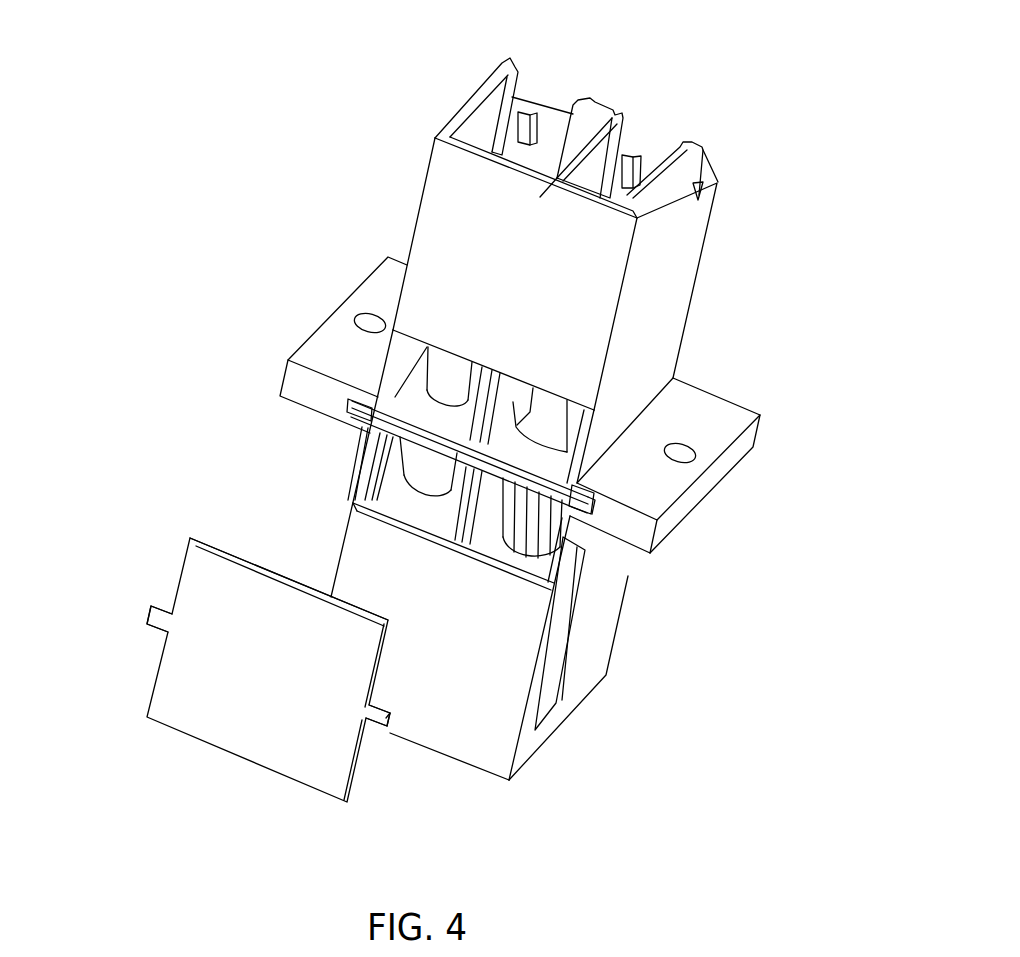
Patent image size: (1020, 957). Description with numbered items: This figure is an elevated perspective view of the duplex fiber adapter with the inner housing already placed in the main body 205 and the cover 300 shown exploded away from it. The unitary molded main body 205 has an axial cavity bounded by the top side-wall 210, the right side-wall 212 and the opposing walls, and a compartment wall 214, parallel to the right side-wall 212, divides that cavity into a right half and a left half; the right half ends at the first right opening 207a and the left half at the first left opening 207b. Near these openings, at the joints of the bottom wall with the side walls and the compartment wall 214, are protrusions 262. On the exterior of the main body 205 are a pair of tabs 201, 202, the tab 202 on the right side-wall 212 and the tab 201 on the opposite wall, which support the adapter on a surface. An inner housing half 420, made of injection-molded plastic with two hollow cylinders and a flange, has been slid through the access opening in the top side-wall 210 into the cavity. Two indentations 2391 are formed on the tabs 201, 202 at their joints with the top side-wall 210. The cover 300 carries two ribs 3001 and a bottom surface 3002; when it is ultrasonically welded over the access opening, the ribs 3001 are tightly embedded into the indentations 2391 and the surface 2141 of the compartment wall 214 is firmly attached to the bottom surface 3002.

The main body 205 is at (722, 230).
The first right opening 207a is at (675, 95).
The first left opening 207b is at (565, 55).
The protrusions 262 is at (523, 128).
The surface 2141 is at (502, 378).
The compartment wall 214 is at (542, 440).
The inner housing half 420 is at (423, 467).
The tab 201 is at (303, 387).
The tab 202 is at (707, 482).
The indentations 2391 is at (345, 412).
The top side-wall 210 is at (373, 563).
The right side-wall 212 is at (600, 613).
The cover 300 is at (218, 582).
The ribs 3001 is at (153, 623).
The bottom surface 3002 is at (255, 560).